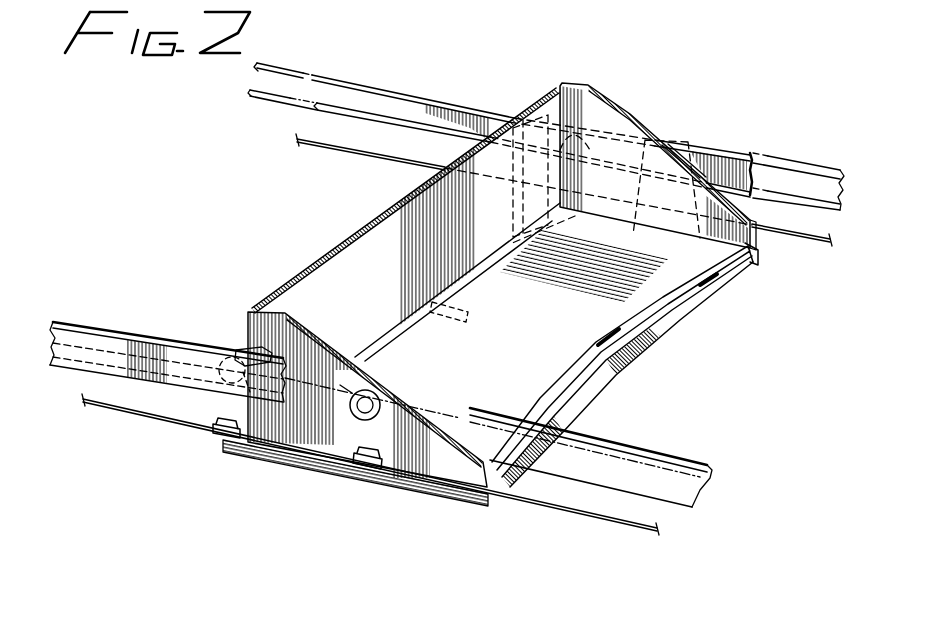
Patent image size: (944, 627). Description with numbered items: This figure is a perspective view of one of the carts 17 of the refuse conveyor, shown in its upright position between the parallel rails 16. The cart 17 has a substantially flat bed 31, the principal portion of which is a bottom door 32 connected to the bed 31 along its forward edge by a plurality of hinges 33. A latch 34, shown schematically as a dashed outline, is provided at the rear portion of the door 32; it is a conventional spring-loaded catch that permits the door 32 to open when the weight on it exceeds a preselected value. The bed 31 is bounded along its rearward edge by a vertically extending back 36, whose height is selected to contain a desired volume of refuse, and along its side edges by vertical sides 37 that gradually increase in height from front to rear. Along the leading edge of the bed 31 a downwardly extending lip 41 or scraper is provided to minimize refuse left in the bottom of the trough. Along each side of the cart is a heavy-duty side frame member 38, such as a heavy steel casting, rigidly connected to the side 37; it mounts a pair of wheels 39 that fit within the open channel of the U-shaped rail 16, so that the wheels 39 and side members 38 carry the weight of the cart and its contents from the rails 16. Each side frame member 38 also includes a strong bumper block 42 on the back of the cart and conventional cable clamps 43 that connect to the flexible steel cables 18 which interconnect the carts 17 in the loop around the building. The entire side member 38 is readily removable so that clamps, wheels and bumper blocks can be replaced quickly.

The rails 16 is at (385, 92).
The cart 17 is at (352, 218).
The flexible steel cables 18 is at (298, 140).
The bed 31 is at (756, 258).
The bottom door 32 is at (695, 312).
The hinges 33 is at (708, 290).
The latch 34 is at (470, 317).
The back 36 is at (422, 182).
The sides 37 is at (638, 120).
The side frame member 38 is at (262, 455).
The wheels 39 is at (197, 388).
The lip 41 is at (665, 360).
The bumper block 42 is at (548, 118).
The cable clamps 43 is at (215, 440).